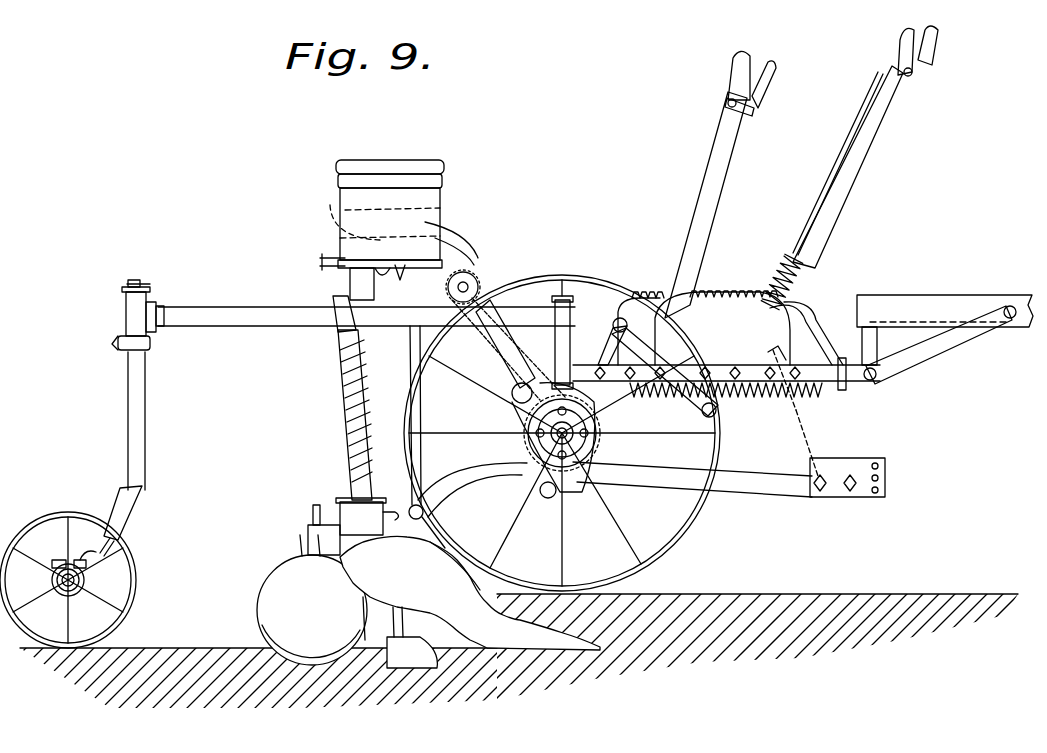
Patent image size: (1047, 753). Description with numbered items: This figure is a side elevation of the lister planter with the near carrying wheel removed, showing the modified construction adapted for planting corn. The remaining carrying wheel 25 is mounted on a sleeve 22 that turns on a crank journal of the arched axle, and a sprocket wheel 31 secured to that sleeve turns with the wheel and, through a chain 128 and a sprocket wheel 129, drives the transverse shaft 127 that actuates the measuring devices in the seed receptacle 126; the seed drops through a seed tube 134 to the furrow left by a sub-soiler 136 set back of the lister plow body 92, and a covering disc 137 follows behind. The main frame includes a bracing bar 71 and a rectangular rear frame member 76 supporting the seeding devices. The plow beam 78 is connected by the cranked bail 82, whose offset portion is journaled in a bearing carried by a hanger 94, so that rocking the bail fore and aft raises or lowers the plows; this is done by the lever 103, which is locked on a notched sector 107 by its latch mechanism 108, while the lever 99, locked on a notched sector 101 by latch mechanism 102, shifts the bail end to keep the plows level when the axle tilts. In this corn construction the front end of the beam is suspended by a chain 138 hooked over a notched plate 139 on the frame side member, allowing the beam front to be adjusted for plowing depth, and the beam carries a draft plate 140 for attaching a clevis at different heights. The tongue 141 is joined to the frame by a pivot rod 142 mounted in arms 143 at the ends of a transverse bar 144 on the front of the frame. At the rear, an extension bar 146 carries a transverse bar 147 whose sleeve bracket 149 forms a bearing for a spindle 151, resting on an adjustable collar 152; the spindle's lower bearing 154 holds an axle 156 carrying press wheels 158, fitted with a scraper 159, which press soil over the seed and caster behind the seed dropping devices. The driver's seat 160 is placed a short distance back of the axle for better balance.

The sleeve 22 is at (530, 474).
The carrying wheel 25 is at (712, 552).
The sprocket wheel 31 is at (545, 428).
The bracing member bar 71 is at (604, 361).
The rectangular frame member 76 is at (403, 422).
The plow beam 78 is at (660, 492).
The bail 82 is at (598, 430).
The lister plow body 92 is at (482, 606).
The bracket or hanger 94 is at (632, 421).
The lever 99 is at (700, 211).
The notched sector 101 is at (655, 296).
The latch mechanism 102 is at (758, 98).
The lever 103 is at (888, 128).
The notched sector 107 is at (748, 292).
The latch mechanism 108 is at (902, 37).
The seed receptacle 126 is at (444, 191).
The transverse shaft 127 is at (468, 280).
The chain 128 is at (510, 360).
The sprocket wheel 129 is at (519, 326).
The seed tube 134 is at (348, 425).
The sub-soiler 136 is at (400, 652).
The covering disc 137 is at (266, 588).
The chain 138 is at (810, 458).
The notched plate 139 is at (786, 346).
The draft plate 140 is at (870, 458).
The tongue 141 is at (962, 288).
The pivot rod 142 is at (878, 379).
The arm 143 is at (864, 385).
The transverse bar 144 is at (842, 360).
The extension bar 146 is at (232, 306).
The transverse bar 147 is at (154, 305).
The bracket 149 is at (126, 335).
The spindle 151 is at (147, 441).
The collar 152 is at (122, 368).
The bearing 154 is at (60, 566).
The axle 156 is at (72, 588).
The press wheel 158 is at (128, 568).
The scraper 159 is at (132, 531).
The driver's seat 160 is at (418, 233).